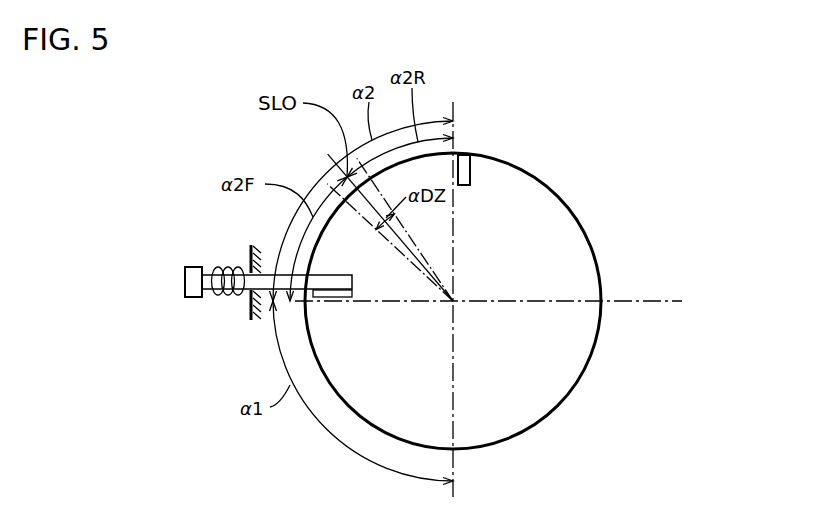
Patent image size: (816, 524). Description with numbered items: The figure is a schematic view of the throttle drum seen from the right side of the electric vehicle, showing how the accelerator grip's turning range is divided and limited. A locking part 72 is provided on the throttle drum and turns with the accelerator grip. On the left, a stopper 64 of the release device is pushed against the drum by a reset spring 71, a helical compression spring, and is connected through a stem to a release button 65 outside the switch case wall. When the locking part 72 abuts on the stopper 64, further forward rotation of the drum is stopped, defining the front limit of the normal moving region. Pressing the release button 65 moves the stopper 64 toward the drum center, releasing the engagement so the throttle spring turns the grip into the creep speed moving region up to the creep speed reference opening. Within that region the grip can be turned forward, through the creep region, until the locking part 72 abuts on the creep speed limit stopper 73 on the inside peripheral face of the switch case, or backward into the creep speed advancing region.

The stopper 64 is at (332, 275).
The release button 65 is at (190, 297).
The reset spring 71 is at (229, 300).
The locking part 72 is at (332, 297).
The creep speed limit stopper 73 is at (470, 170).